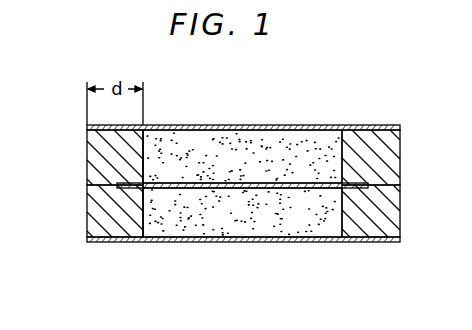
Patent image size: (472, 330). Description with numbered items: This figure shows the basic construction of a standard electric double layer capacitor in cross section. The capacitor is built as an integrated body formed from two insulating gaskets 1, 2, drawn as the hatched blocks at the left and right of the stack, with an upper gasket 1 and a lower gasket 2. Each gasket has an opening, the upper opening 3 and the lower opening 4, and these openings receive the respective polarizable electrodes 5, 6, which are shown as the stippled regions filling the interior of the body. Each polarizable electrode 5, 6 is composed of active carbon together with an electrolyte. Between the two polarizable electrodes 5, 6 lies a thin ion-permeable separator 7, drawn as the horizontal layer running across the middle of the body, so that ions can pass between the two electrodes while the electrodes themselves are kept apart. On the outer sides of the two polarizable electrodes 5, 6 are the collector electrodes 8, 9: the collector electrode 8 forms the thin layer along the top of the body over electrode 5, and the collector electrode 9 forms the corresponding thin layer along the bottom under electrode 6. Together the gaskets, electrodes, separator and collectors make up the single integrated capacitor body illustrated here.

The insulating gasket 1 is at (96, 163).
The insulating gasket 2 is at (96, 221).
The opening 3 is at (146, 137).
The opening 4 is at (146, 226).
The polarizable electrode 5 is at (250, 135).
The polarizable electrode 6 is at (230, 226).
The ion-permeable separator 7 is at (290, 189).
The collector electrode 8 is at (317, 126).
The collector electrode 9 is at (316, 242).